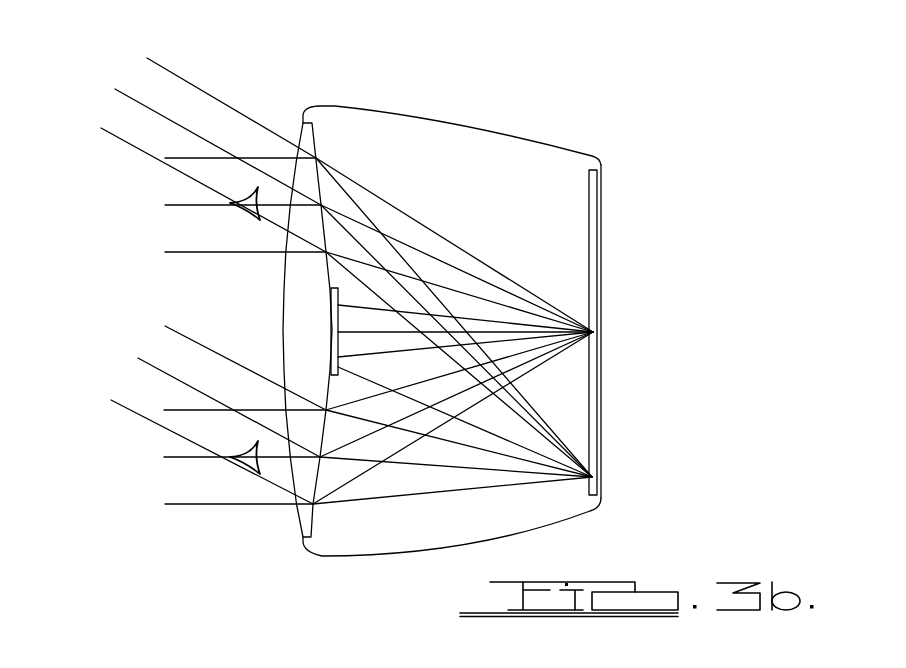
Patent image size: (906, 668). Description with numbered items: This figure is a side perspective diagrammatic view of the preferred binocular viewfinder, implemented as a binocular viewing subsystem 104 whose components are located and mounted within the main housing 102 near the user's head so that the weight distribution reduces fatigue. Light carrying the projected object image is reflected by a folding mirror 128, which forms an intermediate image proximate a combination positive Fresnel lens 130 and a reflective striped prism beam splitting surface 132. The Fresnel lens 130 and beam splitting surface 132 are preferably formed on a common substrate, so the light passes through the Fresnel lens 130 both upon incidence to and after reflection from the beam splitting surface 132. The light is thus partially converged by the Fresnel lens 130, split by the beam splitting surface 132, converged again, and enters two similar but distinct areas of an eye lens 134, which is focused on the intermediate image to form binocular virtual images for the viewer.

The main housing 102 is at (333, 100).
The binocular viewing subsystem 104 is at (627, 312).
The folding mirror 128 is at (319, 312).
The positive Fresnel lens 130 is at (579, 214).
The reflective striped prism beam splitting surface 132 is at (614, 271).
The eye lens 134 is at (273, 343).